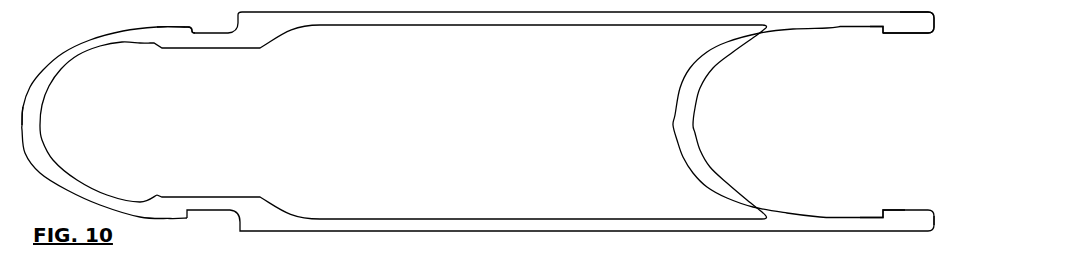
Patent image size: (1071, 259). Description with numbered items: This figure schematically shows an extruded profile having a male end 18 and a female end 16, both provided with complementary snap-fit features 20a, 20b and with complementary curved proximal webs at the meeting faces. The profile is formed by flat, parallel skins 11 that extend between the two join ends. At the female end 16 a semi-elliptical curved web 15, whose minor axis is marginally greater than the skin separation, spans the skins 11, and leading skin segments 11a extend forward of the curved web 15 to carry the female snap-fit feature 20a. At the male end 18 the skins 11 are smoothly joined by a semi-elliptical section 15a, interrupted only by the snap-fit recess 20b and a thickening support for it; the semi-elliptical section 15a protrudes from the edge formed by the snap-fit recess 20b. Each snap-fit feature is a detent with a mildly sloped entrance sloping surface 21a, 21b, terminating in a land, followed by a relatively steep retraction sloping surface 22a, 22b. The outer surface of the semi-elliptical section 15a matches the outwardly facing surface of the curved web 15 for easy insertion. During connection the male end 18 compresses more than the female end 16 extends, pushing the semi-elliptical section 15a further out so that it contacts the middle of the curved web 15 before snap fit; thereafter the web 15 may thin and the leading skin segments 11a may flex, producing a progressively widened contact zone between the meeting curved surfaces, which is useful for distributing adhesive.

The skins 11 is at (493, 26).
The leading skin segments 11a is at (898, 28).
The curved web 15 is at (674, 124).
The semi-elliptical section 15a is at (31, 110).
The female end 16 is at (921, 125).
The male end 18 is at (38, 49).
The snap-fit feature 20a is at (876, 42).
The snap-fit recess 20b is at (190, 12).
The entrance sloping surface 21a is at (895, 200).
The entrance sloping surface 21b is at (185, 27).
The retraction sloping surface 22a is at (872, 210).
The retraction sloping surface 22b is at (191, 33).